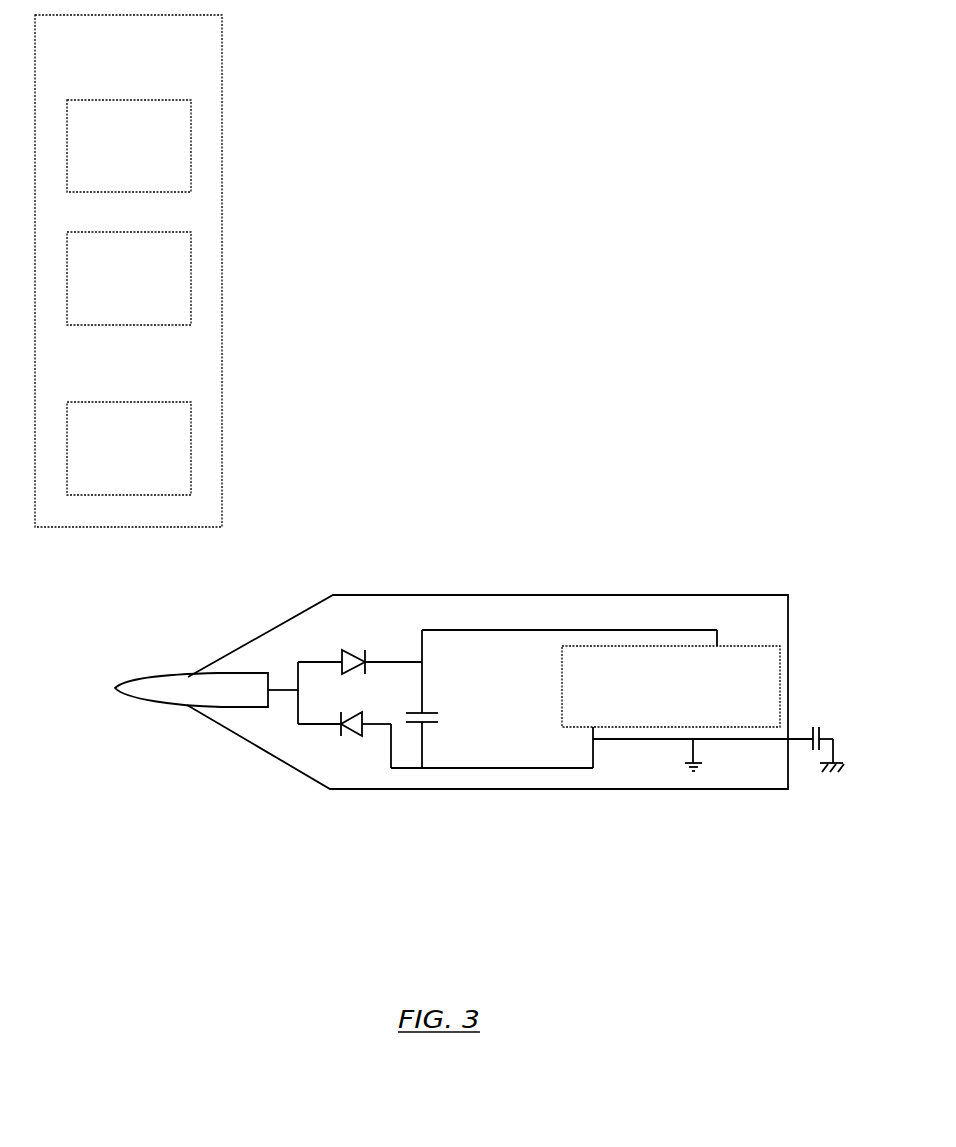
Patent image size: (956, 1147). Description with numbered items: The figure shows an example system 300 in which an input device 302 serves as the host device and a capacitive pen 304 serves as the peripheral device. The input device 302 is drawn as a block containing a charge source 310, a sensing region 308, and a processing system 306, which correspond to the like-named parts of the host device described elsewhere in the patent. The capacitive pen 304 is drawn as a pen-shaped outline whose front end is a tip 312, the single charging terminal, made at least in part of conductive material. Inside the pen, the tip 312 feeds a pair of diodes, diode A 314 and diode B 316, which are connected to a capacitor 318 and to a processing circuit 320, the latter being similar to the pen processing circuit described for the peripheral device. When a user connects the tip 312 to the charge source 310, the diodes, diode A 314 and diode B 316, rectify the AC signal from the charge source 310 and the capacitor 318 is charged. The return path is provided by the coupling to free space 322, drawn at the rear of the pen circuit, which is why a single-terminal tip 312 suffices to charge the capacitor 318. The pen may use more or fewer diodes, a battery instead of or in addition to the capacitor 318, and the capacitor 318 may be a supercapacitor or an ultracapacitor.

The system 300 is at (439, 442).
The input device 302 is at (146, 46).
The capacitive pen 304 is at (479, 649).
The processing system 306 is at (146, 435).
The sensing region 308 is at (146, 265).
The charge source 310 is at (146, 133).
The tip 312 is at (191, 651).
The diode A 314 is at (428, 603).
The diode B 316 is at (274, 790).
The capacitor 318 is at (517, 772).
The processing circuit 320 is at (689, 683).
The coupling to free space 322 is at (672, 798).